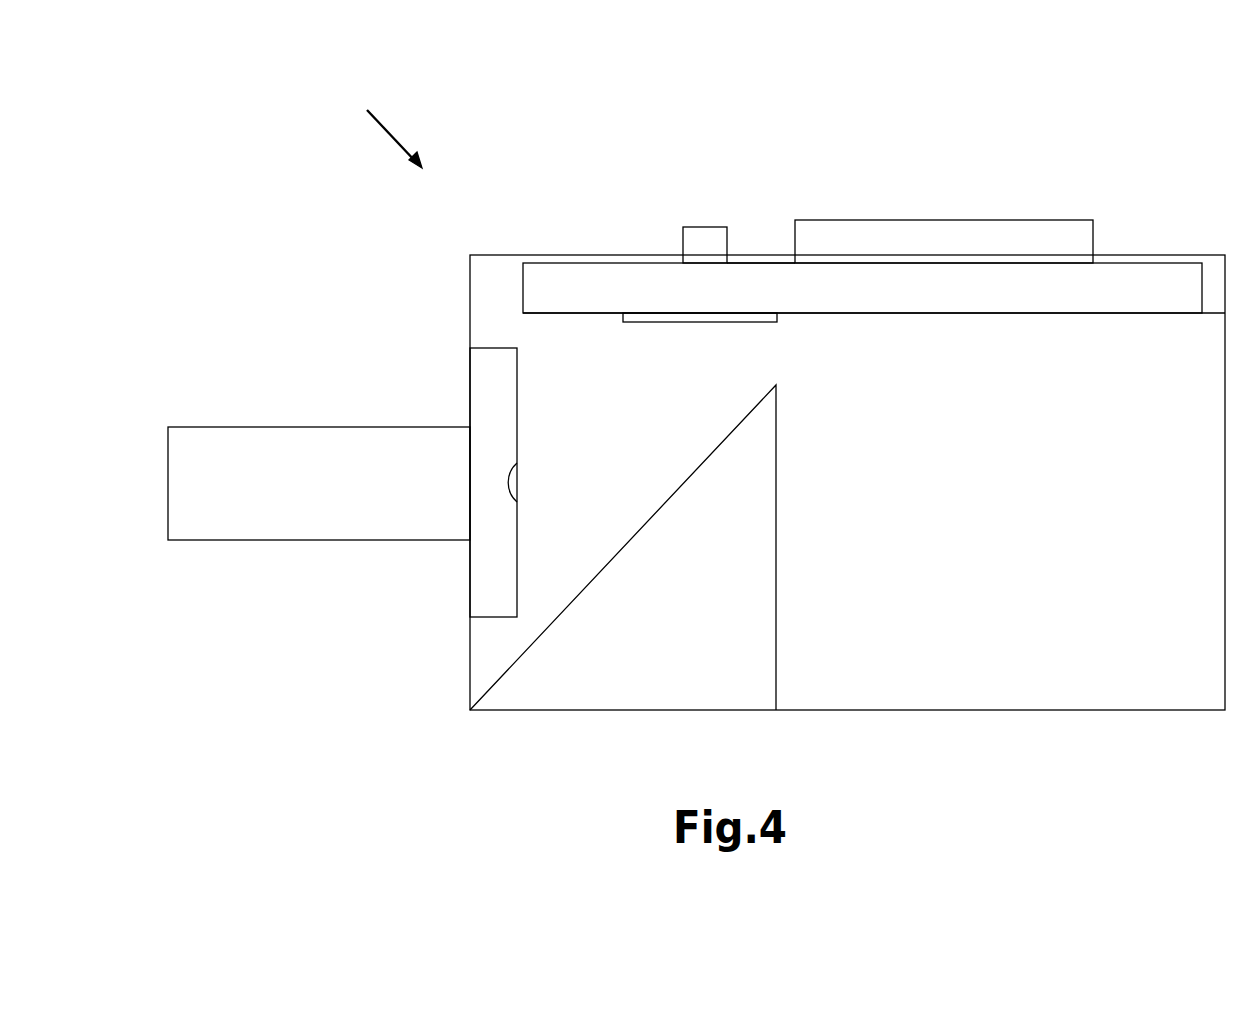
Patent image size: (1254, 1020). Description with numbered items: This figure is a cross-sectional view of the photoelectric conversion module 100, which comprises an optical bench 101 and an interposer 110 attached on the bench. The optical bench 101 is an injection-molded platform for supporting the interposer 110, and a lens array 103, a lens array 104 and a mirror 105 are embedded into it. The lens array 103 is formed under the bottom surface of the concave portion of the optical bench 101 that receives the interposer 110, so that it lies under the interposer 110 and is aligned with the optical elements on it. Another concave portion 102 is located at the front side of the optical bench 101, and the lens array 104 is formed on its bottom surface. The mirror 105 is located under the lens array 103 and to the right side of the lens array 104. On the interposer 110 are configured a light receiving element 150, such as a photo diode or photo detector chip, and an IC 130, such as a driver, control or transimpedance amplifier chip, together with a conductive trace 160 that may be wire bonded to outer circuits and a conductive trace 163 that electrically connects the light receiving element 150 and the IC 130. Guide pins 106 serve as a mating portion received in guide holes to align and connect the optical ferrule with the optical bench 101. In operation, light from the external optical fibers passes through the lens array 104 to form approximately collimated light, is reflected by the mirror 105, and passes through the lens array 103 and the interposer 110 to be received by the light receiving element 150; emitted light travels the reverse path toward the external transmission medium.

The photoelectric conversion module 100 is at (372, 120).
The optical bench 101 is at (1048, 685).
The concave portion 102 is at (492, 572).
The lens array 103 is at (700, 315).
The lens array 104 is at (508, 483).
The mirror 105 is at (587, 593).
The guide pins 106 is at (265, 435).
The interposer 110 is at (568, 285).
The IC 130 is at (935, 245).
The light receiving element 150 is at (700, 243).
The conductive trace 160 is at (1168, 258).
The conductive trace 163 is at (750, 258).